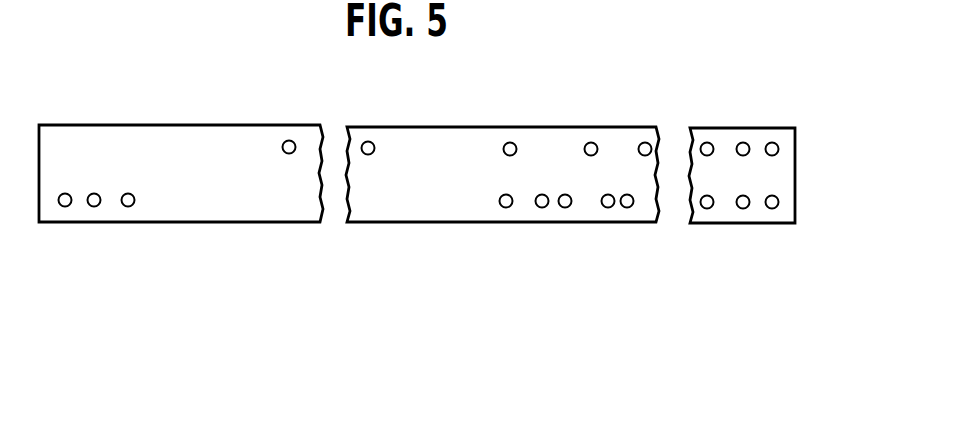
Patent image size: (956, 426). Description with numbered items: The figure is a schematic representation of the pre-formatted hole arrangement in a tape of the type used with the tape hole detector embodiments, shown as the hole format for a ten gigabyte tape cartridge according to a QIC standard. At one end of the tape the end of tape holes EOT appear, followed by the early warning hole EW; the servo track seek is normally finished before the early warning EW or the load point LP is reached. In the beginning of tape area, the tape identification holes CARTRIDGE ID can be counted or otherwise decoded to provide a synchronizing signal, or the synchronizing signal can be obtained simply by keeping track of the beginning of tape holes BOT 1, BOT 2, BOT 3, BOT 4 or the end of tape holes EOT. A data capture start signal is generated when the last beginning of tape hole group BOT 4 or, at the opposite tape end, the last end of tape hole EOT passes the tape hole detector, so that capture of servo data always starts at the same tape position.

The early warning EW is at (287, 140).
The End Of Tape EOT is at (136, 231).
The load point LP is at (370, 142).
The Beginning Of Tape hole BOT 1 is at (503, 195).
The Beginning Of Tape hole BOT 2 is at (701, 199).
The Beginning Of Tape hole BOT 3 is at (745, 156).
The Beginning Of Tape hole BOT 4 is at (778, 198).
The tape identification holes CARTRIDGE ID is at (648, 232).